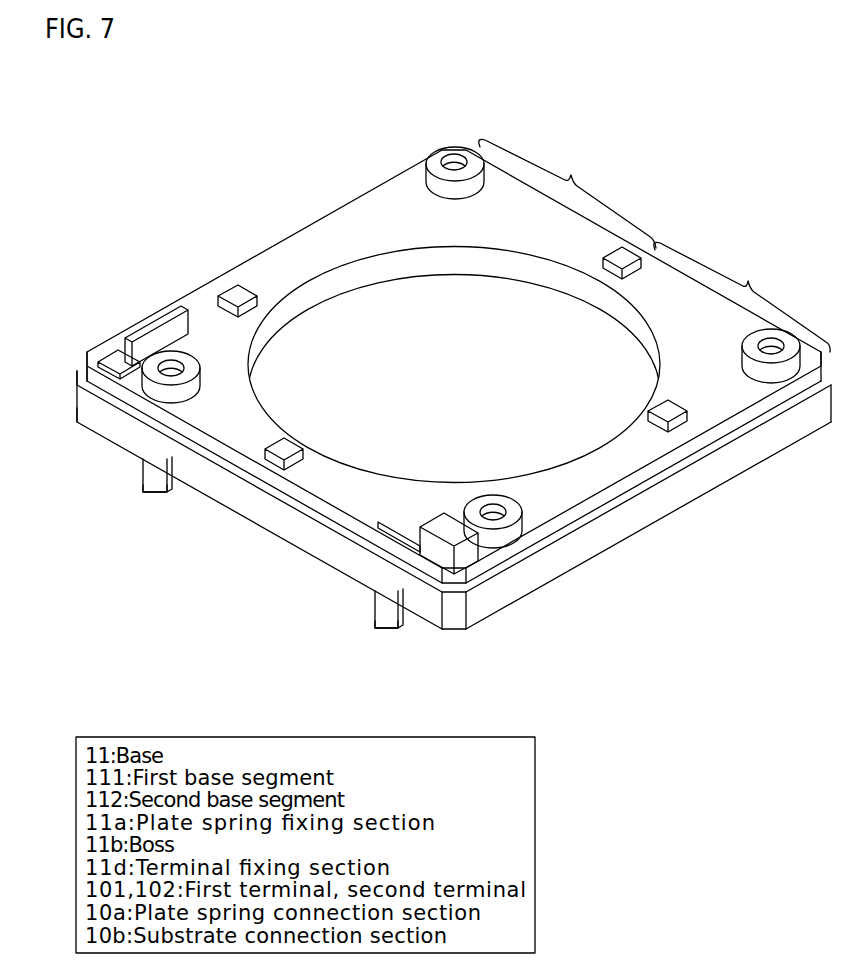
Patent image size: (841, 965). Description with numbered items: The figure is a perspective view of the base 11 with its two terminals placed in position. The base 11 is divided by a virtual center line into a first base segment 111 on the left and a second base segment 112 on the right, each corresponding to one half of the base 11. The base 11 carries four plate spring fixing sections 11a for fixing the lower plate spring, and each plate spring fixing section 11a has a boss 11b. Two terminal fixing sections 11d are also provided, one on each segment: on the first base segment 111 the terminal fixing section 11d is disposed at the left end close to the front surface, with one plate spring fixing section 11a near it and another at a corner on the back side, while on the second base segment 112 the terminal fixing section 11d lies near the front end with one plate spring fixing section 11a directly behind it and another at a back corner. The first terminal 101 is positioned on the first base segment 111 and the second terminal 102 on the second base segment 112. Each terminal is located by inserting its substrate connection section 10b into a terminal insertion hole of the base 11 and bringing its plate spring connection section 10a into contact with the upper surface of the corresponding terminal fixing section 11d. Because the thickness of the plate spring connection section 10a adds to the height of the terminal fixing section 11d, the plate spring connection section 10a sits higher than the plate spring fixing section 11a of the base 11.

The base 11 is at (309, 230).
The first base segment 111 is at (567, 193).
The second base segment 112 is at (742, 297).
The plate spring fixing section 11a is at (431, 154).
The boss 11b is at (452, 161).
The terminal fixing section 11d is at (472, 552).
The first terminal 101 is at (150, 496).
The second terminal 102 is at (381, 624).
The plate spring connection section 10a is at (100, 361).
The substrate connection section 10b is at (152, 492).